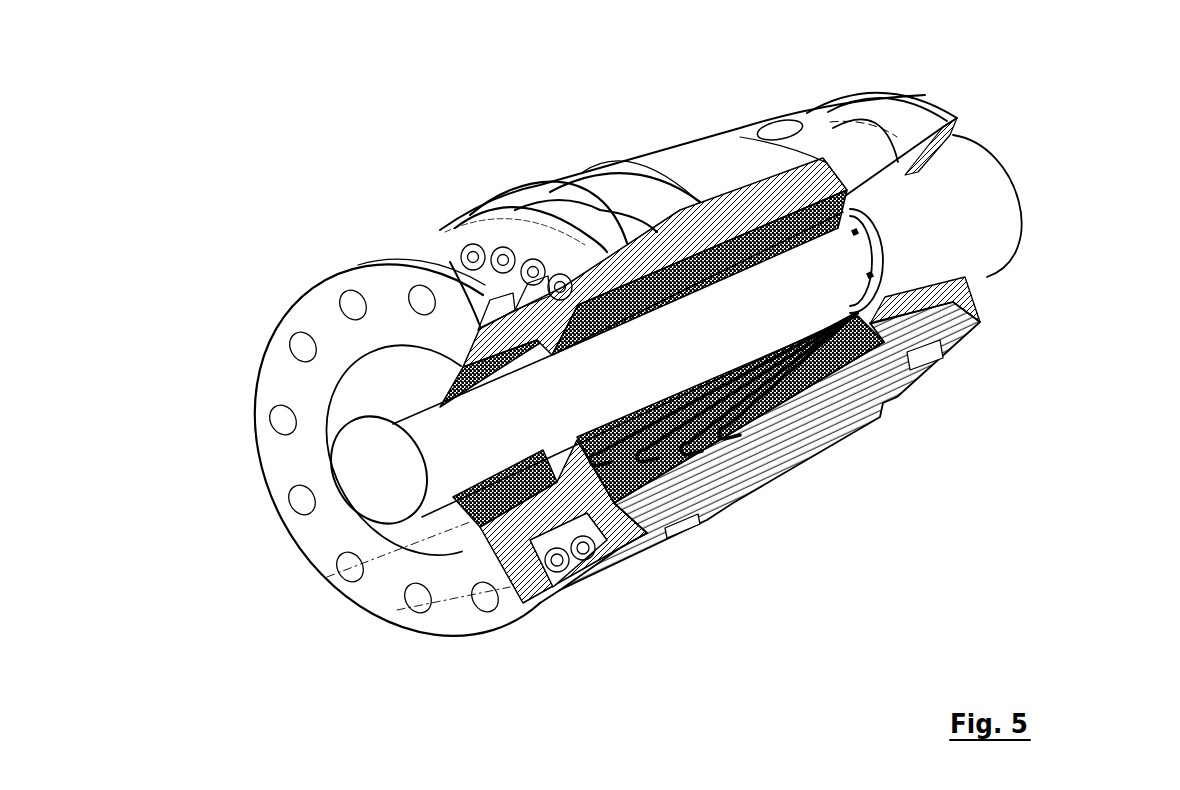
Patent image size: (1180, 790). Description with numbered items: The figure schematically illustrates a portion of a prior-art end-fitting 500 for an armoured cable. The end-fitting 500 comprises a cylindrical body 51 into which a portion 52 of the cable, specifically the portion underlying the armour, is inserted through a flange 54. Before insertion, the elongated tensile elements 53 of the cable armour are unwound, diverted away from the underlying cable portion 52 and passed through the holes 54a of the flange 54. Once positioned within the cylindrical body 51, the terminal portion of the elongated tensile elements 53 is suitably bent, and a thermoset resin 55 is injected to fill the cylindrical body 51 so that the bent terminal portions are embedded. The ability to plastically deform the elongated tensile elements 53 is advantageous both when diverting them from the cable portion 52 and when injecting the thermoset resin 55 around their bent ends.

The end-fitting 500 is at (416, 152).
The cylindrical body 51 is at (752, 473).
The portion of a cable 52 is at (357, 470).
The elongated tensile elements 53 is at (803, 378).
The flange 54 is at (980, 198).
The holes of the flange 54a is at (878, 277).
The thermoset resin 55 is at (707, 253).